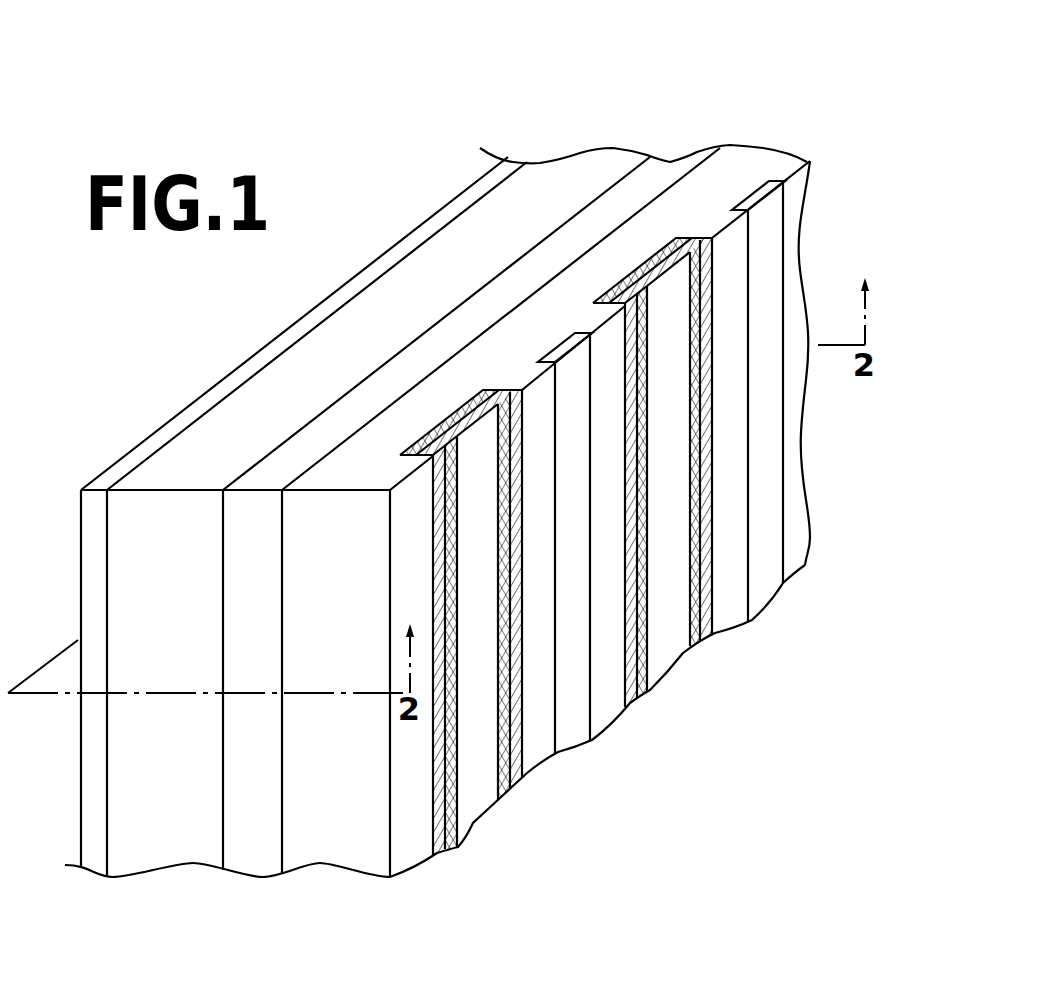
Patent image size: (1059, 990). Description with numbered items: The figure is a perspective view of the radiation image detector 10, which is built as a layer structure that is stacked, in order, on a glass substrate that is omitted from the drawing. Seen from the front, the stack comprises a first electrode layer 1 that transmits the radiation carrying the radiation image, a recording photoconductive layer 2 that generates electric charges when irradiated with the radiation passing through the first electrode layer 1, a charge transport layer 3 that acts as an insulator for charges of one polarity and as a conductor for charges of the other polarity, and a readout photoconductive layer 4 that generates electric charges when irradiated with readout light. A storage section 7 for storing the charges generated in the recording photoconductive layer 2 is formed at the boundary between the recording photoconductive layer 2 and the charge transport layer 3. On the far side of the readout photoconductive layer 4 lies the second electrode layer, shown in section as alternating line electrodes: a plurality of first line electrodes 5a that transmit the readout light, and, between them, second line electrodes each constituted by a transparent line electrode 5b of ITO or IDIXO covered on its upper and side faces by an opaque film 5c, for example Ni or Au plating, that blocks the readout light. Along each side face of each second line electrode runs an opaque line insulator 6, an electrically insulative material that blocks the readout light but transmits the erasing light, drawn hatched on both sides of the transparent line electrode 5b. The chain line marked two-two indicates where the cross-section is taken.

The first electrode layer 1 is at (95, 855).
The recording photoconductive layer 2 is at (145, 853).
The charge transport layer 3 is at (258, 853).
The readout photoconductive layer 4 is at (333, 853).
The first line electrodes 5a is at (578, 728).
The transparent line electrode 5b is at (478, 803).
The opaque film 5c is at (450, 420).
The opaque line insulator 6 is at (440, 855).
The storage section 7 is at (218, 852).
The radiation image detector 10 is at (687, 92).